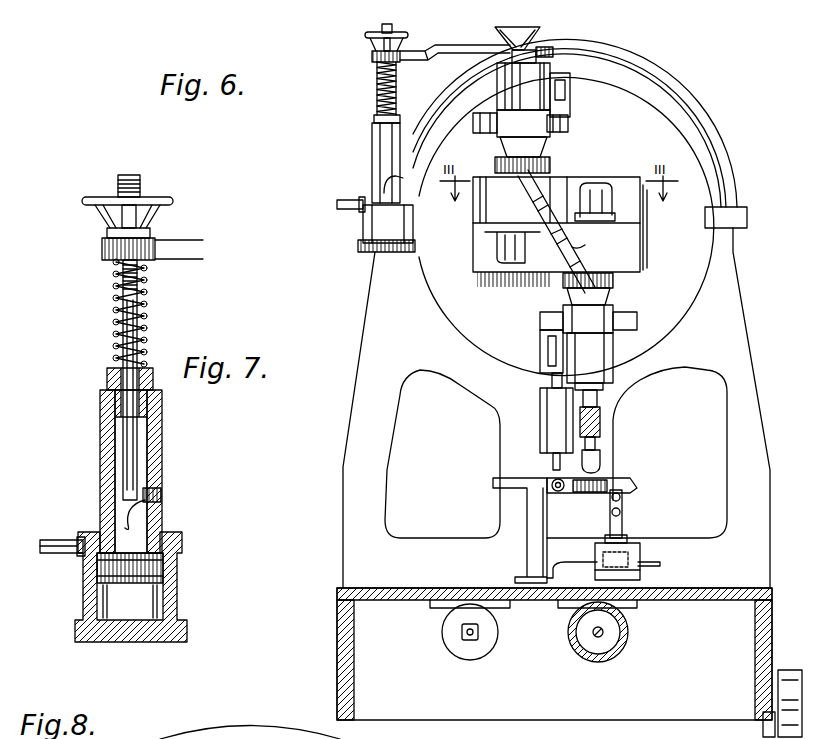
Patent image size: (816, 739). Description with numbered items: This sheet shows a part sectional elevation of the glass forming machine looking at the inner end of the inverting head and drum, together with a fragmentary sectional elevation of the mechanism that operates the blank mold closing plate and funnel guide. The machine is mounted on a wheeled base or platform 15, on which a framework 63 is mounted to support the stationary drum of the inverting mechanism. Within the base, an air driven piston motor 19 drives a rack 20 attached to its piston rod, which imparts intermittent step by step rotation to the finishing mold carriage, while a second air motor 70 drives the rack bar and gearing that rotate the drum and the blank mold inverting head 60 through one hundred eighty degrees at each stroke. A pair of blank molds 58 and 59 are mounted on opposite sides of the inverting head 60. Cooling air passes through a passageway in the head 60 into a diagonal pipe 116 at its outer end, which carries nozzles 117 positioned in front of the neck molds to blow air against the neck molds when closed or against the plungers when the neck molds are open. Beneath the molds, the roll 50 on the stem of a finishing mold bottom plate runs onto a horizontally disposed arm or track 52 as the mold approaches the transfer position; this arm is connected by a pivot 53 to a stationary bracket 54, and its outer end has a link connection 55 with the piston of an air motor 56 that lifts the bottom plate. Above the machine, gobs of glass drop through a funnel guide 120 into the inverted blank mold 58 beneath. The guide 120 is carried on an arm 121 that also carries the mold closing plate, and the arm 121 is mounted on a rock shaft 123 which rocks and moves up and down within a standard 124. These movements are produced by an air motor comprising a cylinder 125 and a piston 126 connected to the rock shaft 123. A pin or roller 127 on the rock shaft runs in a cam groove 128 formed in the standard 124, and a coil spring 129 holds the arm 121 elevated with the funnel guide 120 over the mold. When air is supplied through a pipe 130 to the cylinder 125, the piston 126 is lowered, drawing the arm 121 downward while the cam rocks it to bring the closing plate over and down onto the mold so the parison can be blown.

In FIG. 6, the wheeled base or platform 15 is at (340, 647).
In FIG. 6, the air driven piston motor 19 is at (455, 645).
In FIG. 6, the rack 20 is at (478, 632).
In FIG. 6, the roll 50 is at (601, 468).
In FIG. 6, the horizontally disposed arm or track 52 is at (636, 484).
In FIG. 6, the pivot 53 is at (556, 492).
In FIG. 6, the stationary bracket 54 is at (527, 559).
In FIG. 6, the link connection 55 is at (623, 500).
In FIG. 6, the air motor 56 is at (641, 566).
In FIG. 6, the blank mold 58 is at (507, 88).
In FIG. 6, the blank mold 59 is at (613, 371).
In FIG. 6, the blank mold inverting head 60 is at (553, 182).
In FIG. 6, the framework 63 is at (357, 432).
In FIG. 6, the air motor 70 is at (625, 643).
In FIG. 6, the diagonal pipe 116 is at (568, 246).
In FIG. 6, the nozzles 117 is at (522, 185).
In FIG. 6, the funnel guide 120 is at (542, 36).
In FIG. 6, the arm 121 is at (463, 39).
In FIG. 7, the arm 121 is at (190, 240).
In FIG. 6, the rock shaft 123 is at (376, 90).
In FIG. 7, the rock shaft 123 is at (131, 346).
In FIG. 7, the standard 124 is at (160, 441).
In FIG. 7, the cylinder 125 is at (160, 606).
In FIG. 7, the piston 126 is at (165, 562).
In FIG. 7, the pin or roller 127 is at (156, 491).
In FIG. 7, the cam groove 128 is at (150, 502).
In FIG. 7, the coil spring 129 is at (143, 318).
In FIG. 7, the pipe 130 is at (55, 540).